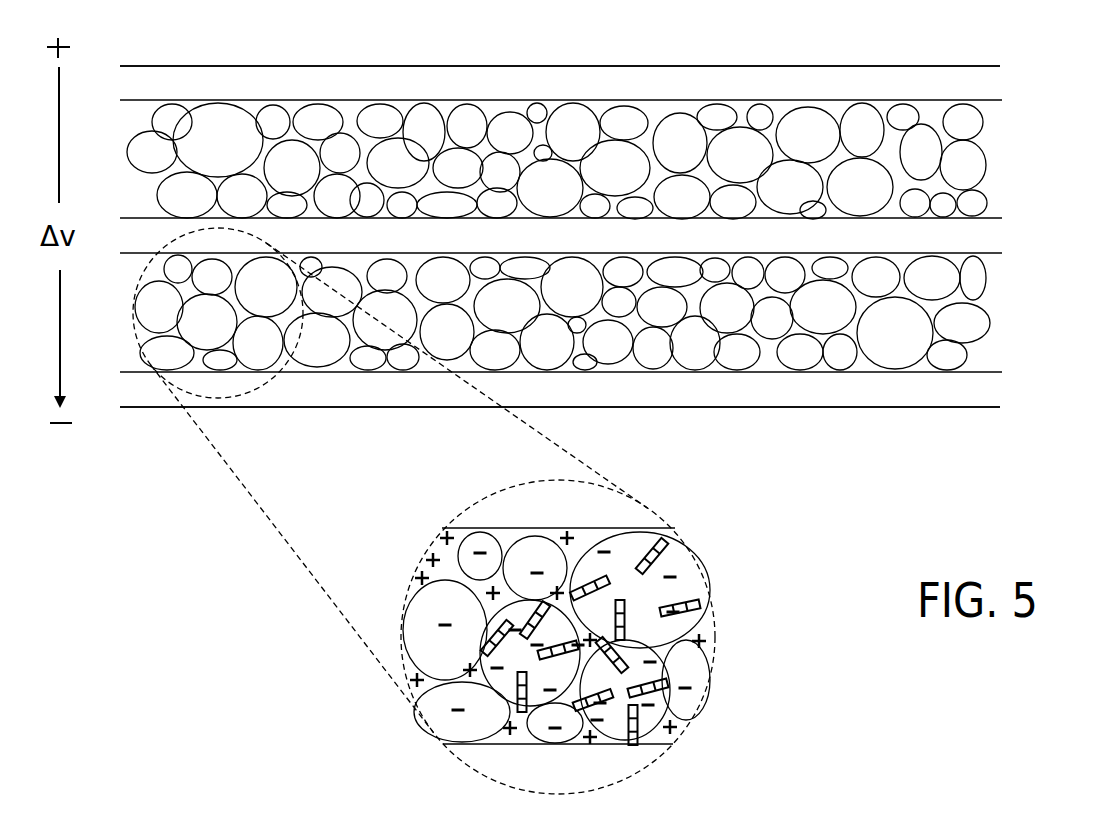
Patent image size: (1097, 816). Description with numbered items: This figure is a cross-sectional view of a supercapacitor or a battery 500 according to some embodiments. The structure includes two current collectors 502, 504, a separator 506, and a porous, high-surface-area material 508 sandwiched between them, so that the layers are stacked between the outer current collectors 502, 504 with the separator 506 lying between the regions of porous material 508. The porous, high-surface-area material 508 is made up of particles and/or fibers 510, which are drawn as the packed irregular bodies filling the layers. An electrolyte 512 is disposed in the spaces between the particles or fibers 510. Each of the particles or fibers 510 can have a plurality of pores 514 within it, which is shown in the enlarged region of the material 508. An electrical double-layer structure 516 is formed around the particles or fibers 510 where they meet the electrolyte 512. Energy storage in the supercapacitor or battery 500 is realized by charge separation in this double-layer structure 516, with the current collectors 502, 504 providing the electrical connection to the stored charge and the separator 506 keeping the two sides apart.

The supercapacitor or battery 500 is at (797, 452).
The current collector 502 is at (980, 77).
The current collector 504 is at (980, 391).
The separator 506 is at (992, 233).
The porous, high-surface-area material 508 is at (350, 668).
The particles or fibers 510 is at (418, 617).
The electrolyte 512 is at (676, 110).
The pores 514 is at (677, 592).
The electrical double-layer structure 516 is at (710, 643).